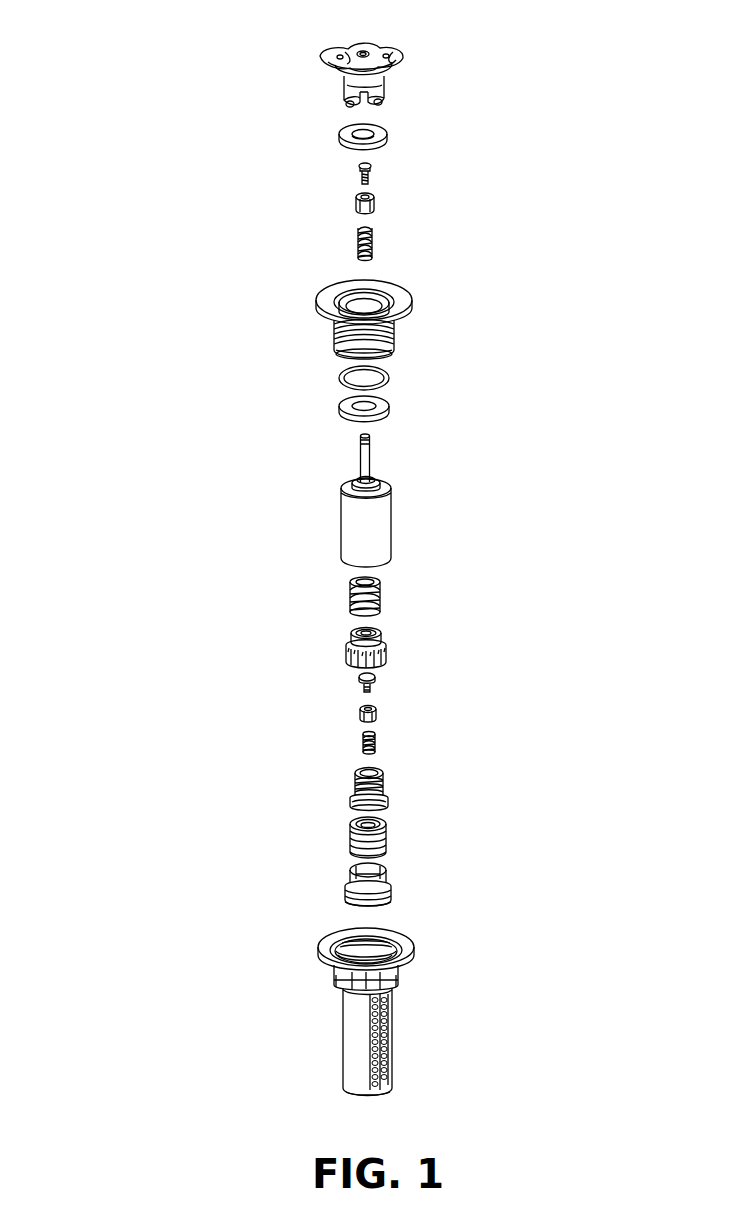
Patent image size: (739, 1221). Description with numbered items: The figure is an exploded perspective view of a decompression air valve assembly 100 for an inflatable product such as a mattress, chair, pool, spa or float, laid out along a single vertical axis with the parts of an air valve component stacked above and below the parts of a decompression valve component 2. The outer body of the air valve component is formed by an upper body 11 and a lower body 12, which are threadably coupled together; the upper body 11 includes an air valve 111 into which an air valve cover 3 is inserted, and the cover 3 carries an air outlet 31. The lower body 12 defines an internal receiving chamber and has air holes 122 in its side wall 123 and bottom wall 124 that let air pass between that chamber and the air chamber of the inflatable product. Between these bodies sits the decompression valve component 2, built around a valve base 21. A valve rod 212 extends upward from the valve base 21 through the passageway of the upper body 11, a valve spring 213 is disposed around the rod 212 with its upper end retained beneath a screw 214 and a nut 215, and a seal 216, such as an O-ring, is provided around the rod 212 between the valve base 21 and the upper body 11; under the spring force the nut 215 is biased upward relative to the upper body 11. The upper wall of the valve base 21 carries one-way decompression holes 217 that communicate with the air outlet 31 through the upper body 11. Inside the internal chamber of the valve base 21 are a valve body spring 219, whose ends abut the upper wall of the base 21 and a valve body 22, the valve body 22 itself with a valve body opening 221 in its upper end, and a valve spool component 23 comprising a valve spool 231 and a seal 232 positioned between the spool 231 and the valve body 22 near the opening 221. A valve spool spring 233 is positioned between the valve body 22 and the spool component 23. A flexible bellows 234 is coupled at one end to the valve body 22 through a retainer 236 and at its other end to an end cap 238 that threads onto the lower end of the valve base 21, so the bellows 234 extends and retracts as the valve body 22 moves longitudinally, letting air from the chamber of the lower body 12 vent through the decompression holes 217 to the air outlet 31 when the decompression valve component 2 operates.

The decompression air valve assembly 100 is at (180, 183).
The decompression valve component 2 is at (574, 683).
The air valve cover 3 is at (358, 86).
The air outlet 31 is at (364, 53).
The upper body 11 is at (318, 298).
The air valve 111 is at (368, 310).
The lower body 12 is at (318, 944).
The air holes 122 is at (380, 1058).
The side wall 123 is at (344, 1038).
The bottom wall 124 is at (362, 1096).
The valve base 21 is at (378, 531).
The valve rod 212 is at (366, 462).
The valve spring 213 is at (360, 232).
The screw 214 is at (372, 165).
The nut 215 is at (376, 203).
The seal 216 is at (388, 404).
The one-way decompression holes 217 is at (344, 491).
The valve body spring 219 is at (350, 601).
The valve body 22 is at (384, 633).
The valve body opening 221 is at (360, 633).
The valve spool component 23 is at (514, 724).
The valve spool 231 is at (378, 713).
The seal 232 is at (378, 677).
The valve spool spring 233 is at (378, 741).
The flexible bellows 234 is at (386, 844).
The retainer 236 is at (356, 783).
The end cap 238 is at (394, 893).